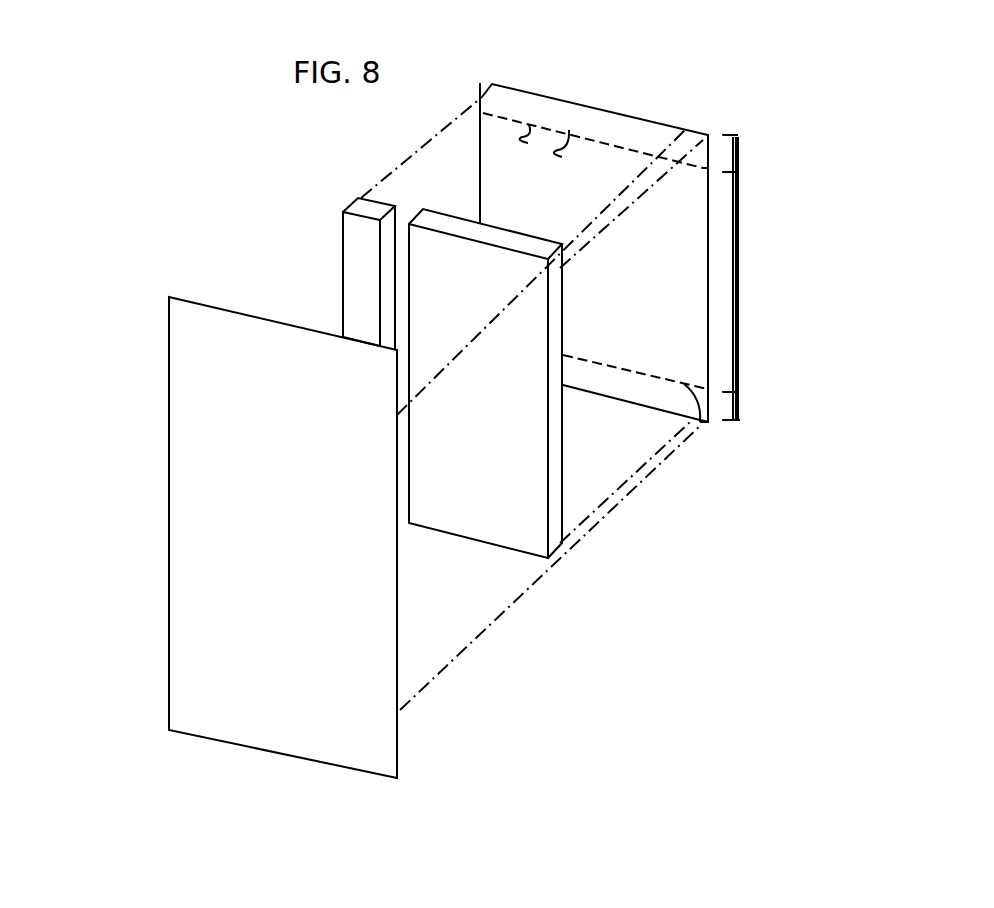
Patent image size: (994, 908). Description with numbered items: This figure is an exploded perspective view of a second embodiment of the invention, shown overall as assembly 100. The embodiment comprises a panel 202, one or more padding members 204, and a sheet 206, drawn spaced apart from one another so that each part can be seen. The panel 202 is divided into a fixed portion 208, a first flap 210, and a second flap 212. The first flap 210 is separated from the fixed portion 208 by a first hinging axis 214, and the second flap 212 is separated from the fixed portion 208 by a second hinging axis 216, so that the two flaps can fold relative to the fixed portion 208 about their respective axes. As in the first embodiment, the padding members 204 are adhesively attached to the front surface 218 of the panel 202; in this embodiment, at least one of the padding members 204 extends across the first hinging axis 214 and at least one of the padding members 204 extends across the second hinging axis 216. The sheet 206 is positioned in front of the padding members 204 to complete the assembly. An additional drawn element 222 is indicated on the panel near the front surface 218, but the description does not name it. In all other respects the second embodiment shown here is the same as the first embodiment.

The display assembly 100 is at (266, 107).
The panel 202 is at (672, 133).
The padding member 204 is at (433, 293).
The sheet 206 is at (201, 535).
The fixed portion 208 is at (742, 240).
The first flap 210 is at (740, 407).
The second flap 212 is at (742, 150).
The first hinging axis 214 is at (700, 427).
The second hinging axis 216 is at (606, 142).
The front surface 218 is at (529, 125).
The fastener 222 is at (570, 130).